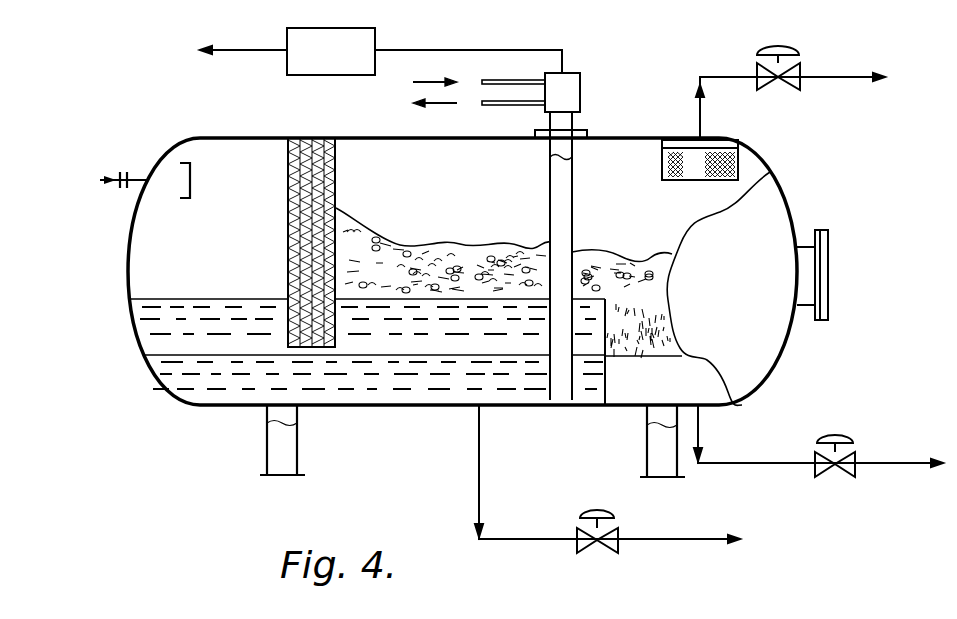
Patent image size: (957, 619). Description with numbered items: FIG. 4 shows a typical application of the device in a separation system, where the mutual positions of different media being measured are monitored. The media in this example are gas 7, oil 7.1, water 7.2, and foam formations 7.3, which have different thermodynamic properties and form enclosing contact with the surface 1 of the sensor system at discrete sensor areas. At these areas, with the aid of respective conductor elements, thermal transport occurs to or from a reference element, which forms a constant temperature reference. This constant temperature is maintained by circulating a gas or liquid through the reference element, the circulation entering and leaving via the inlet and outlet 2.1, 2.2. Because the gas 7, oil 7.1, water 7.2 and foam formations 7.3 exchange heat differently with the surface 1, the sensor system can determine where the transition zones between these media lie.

The surface of the sensor system 1 is at (562, 147).
The inlet 2.1 is at (497, 80).
The outlet 2.2 is at (497, 106).
The gas 7 is at (662, 168).
The oil 7.1 is at (152, 333).
The water 7.2 is at (199, 380).
The foam formations 7.3 is at (583, 275).